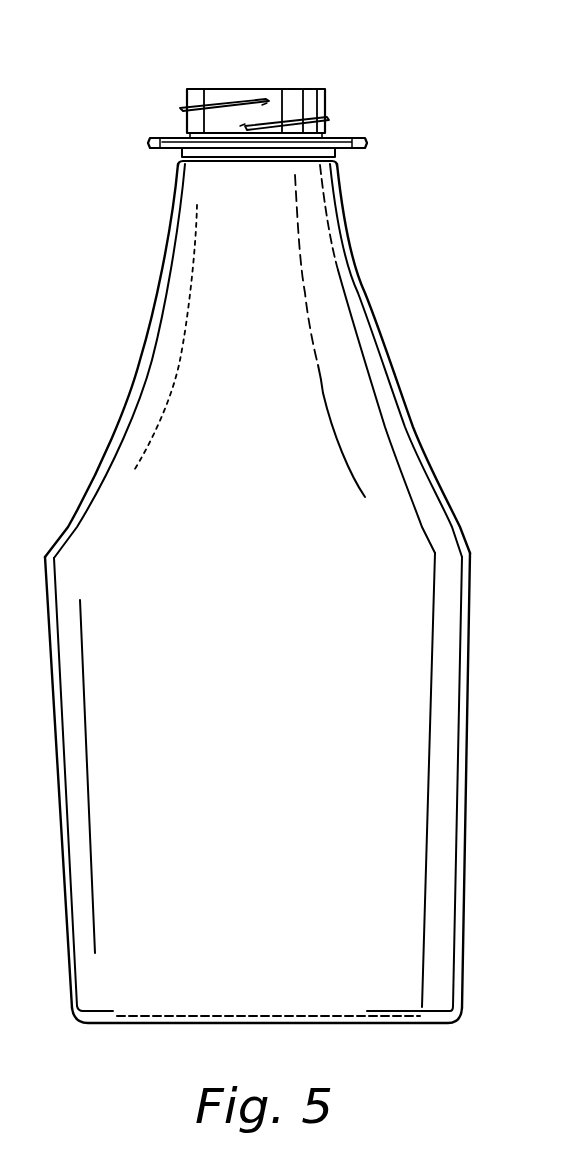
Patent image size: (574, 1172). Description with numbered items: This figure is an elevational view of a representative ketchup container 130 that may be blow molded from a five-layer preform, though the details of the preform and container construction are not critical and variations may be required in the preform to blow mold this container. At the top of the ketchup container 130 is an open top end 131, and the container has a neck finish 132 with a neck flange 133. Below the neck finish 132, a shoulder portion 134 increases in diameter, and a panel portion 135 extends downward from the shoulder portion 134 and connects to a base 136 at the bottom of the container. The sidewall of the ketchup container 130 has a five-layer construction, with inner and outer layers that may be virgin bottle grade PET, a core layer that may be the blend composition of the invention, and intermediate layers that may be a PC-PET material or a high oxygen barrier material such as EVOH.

The ketchup container 130 is at (432, 342).
The open top end 131 is at (312, 88).
The neck finish 132 is at (330, 117).
The neck flange 133 is at (363, 148).
The shoulder portion 134 is at (363, 312).
The panel portion 135 is at (472, 655).
The base 136 is at (400, 1023).